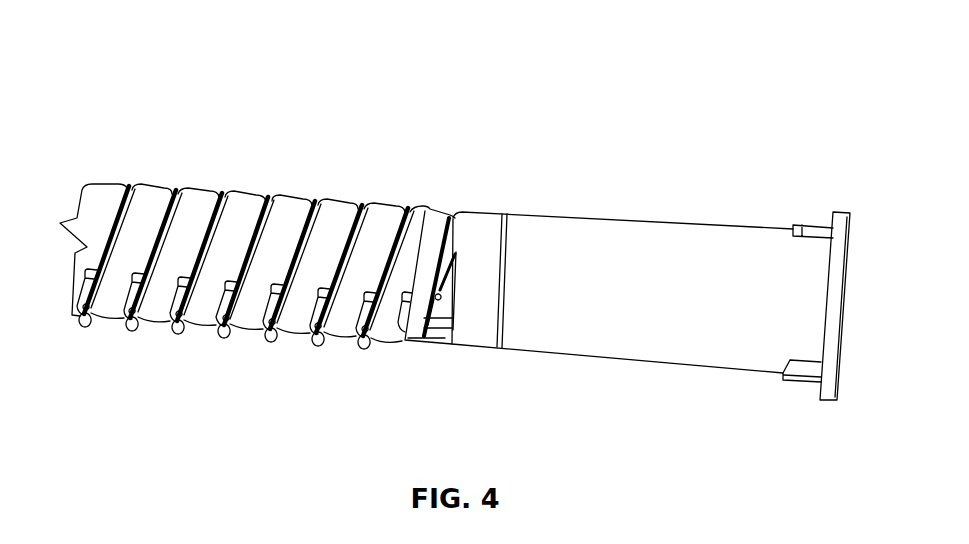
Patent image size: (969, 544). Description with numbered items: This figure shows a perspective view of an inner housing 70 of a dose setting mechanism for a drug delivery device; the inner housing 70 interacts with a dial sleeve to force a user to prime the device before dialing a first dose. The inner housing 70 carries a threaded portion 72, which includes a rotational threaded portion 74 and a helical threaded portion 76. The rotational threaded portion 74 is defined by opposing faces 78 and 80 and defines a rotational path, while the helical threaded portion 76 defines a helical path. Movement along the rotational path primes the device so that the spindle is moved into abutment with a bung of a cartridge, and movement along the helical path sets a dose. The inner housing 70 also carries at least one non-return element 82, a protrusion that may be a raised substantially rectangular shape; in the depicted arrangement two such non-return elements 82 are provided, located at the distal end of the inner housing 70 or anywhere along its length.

The inner housing 70 is at (392, 52).
The threaded portion 72 is at (319, 168).
The rotational threaded portion 74 is at (434, 345).
The helical threaded portion 76 is at (361, 208).
The opposing face 78 is at (428, 212).
The opposing face 80 is at (446, 347).
The non-return element 82 is at (814, 225).